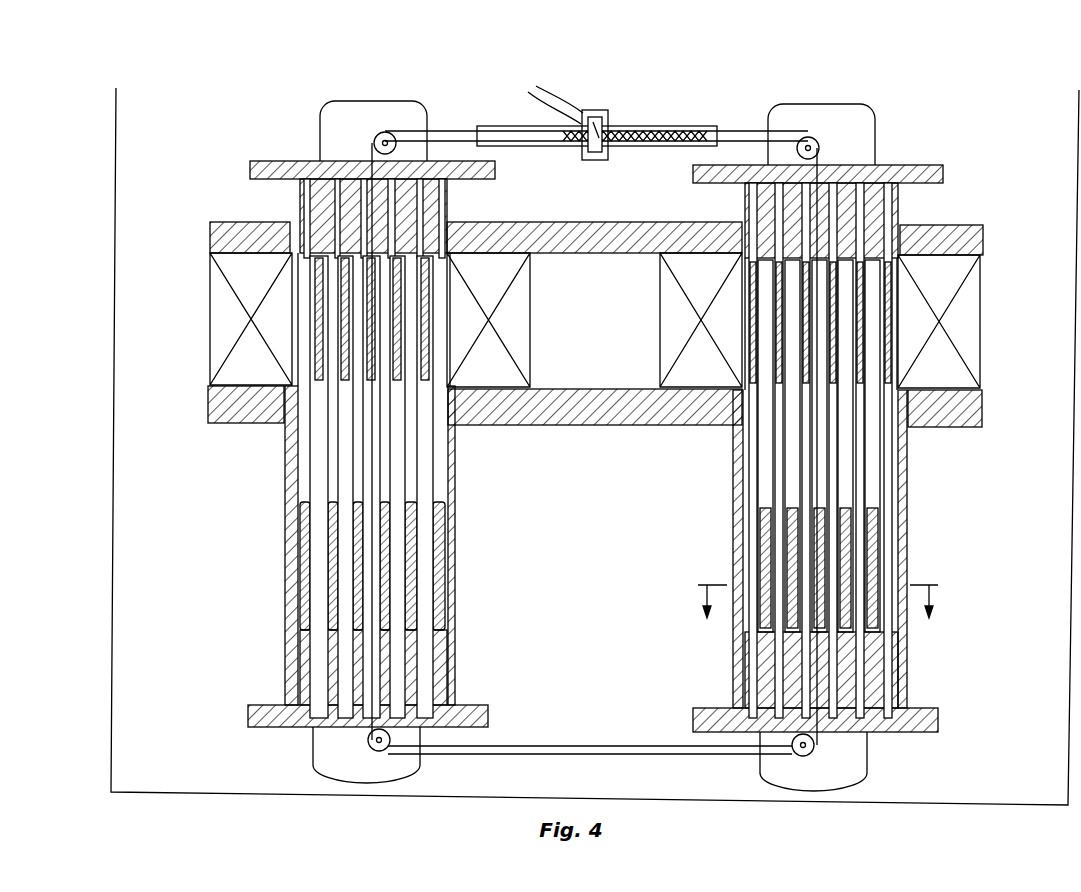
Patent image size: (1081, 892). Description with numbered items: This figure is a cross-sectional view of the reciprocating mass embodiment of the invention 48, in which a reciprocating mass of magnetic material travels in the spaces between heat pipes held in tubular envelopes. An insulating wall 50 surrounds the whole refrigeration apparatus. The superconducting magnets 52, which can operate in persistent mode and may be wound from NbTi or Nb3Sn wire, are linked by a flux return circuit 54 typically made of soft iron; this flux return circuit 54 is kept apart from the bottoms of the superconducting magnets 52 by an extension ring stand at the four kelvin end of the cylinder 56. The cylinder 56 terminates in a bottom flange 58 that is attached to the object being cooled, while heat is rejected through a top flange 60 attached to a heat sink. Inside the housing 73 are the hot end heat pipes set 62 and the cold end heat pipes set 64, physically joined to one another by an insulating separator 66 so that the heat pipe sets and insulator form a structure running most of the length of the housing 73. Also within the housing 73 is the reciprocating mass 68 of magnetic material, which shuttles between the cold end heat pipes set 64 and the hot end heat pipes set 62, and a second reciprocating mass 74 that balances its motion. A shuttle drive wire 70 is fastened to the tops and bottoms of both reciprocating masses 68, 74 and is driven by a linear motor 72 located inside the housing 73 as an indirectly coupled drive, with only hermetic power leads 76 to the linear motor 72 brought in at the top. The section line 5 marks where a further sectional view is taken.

The reciprocating mass embodiment of the invention 48 is at (997, 142).
The insulating wall 50 is at (1072, 563).
The superconducting magnets 52 is at (207, 292).
The flux return circuit 54 is at (208, 407).
The cylinder 56 is at (287, 588).
The bottom flange 58 is at (251, 718).
The top flange 60 is at (268, 162).
The hot end heat pipes set 62 is at (333, 200).
The cold end heat pipes set 64 is at (302, 660).
The insulating separator 66 is at (305, 482).
The reciprocating mass 68 is at (318, 356).
The shuttle drive wire 70 is at (454, 128).
The linear motor 72 is at (610, 120).
The housing 73 is at (506, 128).
The second reciprocating mass 74 is at (868, 507).
The power leads 76 is at (562, 97).
The section line 5- 5 is at (818, 588).